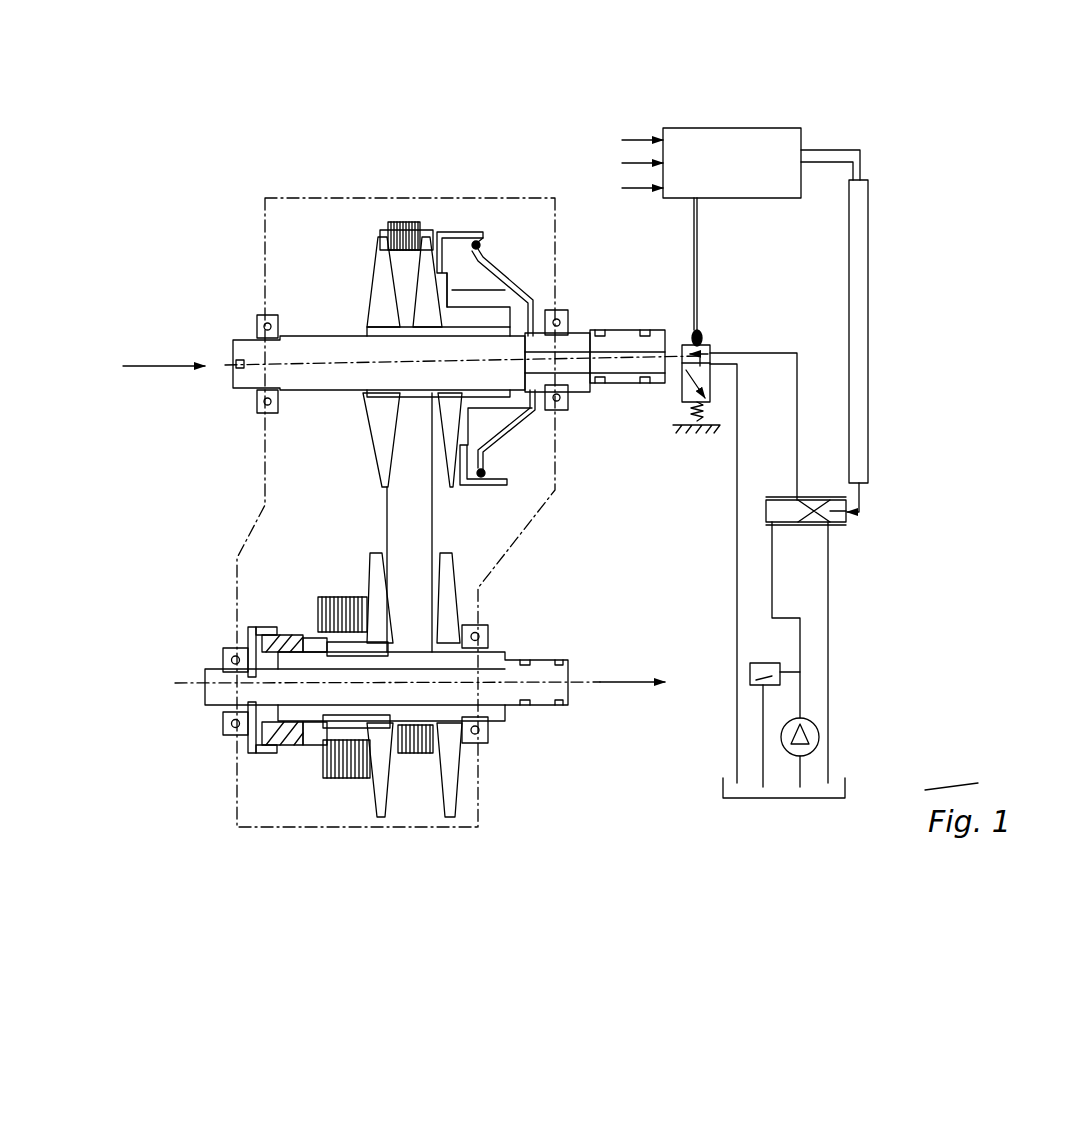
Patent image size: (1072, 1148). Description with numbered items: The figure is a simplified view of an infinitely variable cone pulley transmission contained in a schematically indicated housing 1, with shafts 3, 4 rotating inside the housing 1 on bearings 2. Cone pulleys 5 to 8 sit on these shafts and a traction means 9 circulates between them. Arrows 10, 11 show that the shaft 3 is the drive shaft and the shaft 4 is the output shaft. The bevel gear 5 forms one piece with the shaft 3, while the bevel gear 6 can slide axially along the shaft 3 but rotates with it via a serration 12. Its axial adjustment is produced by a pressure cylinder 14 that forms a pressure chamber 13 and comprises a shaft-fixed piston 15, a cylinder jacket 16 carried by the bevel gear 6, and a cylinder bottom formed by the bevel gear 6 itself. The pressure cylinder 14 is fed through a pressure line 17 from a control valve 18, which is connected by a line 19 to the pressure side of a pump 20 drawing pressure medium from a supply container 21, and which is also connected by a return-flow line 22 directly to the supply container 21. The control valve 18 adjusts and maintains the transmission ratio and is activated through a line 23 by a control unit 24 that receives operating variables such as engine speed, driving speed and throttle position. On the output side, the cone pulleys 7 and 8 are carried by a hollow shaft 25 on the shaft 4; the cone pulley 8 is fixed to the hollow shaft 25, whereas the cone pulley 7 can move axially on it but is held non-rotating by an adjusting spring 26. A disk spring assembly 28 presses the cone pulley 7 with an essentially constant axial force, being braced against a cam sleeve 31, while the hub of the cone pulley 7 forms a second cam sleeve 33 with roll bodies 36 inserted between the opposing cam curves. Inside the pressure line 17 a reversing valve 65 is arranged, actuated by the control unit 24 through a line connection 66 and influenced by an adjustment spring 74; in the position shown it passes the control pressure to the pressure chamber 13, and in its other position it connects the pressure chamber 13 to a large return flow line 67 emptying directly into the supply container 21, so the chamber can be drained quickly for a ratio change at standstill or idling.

The housing 1 is at (262, 212).
The bearings 2 is at (257, 318).
The shaft 3 is at (253, 375).
The shaft 4 is at (210, 705).
The bevel gear 5 is at (372, 238).
The bevel gear 6 is at (427, 233).
The cone pulley 7 is at (348, 722).
The cone pulley 8 is at (460, 820).
The traction means 9 is at (403, 220).
The arrow 10 is at (137, 362).
The arrow 11 is at (605, 684).
The serration 12 is at (483, 387).
The pressure chamber 13 is at (472, 293).
The pressure cylinder 14 is at (493, 223).
The piston 15 is at (525, 283).
The cylinder jacket 16 is at (453, 233).
The pressure line 17 is at (800, 412).
The control valve 18 is at (850, 507).
The line 19 is at (773, 580).
The pump 20 is at (808, 744).
The supply container 21 is at (722, 798).
The return-flow line 22 is at (830, 655).
The line 23 is at (862, 245).
The control unit 24 is at (770, 142).
The hollow shaft 25 is at (485, 708).
The adjusting spring 26 is at (322, 765).
The disk spring assembly 28 is at (347, 595).
The cam sleeve 31 is at (260, 738).
The cam sleeve 33 is at (305, 752).
The roll bodies 36 is at (262, 752).
The reversing valve 65 is at (678, 372).
The line connection 66 is at (697, 275).
The return flow line 67 is at (735, 548).
The adjustment spring 74 is at (692, 427).